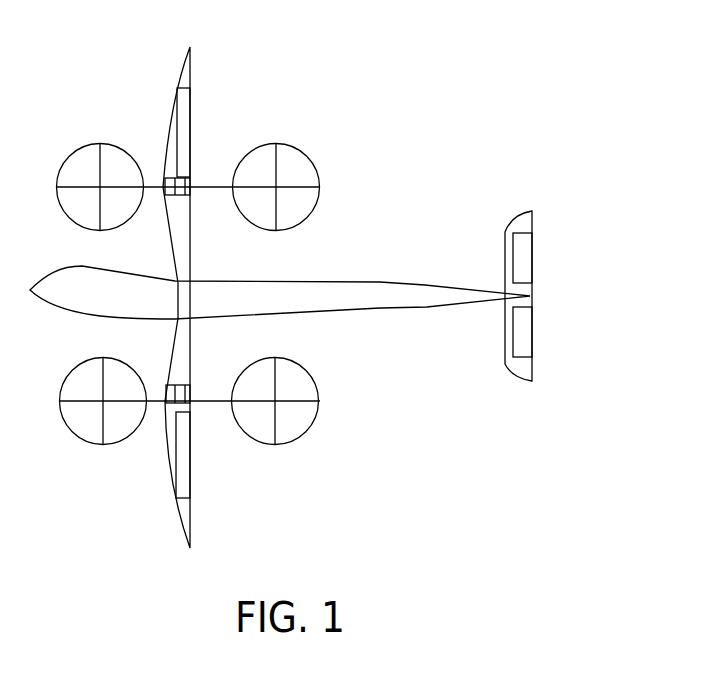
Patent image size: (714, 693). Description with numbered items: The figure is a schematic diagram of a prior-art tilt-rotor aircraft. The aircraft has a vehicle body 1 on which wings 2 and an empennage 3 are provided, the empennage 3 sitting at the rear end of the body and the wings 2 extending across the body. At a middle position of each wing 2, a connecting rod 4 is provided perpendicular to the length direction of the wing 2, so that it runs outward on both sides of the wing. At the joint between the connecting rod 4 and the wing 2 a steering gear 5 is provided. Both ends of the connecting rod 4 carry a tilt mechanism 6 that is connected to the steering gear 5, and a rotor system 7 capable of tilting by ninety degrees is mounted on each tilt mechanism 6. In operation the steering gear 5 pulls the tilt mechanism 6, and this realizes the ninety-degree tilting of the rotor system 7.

The vehicle body 1 is at (305, 298).
The wing 2 is at (173, 147).
The empennage 3 is at (523, 257).
The connecting rod 4 is at (205, 183).
The steering gear 5 is at (173, 197).
The tilt mechanism 6 is at (276, 187).
The rotor system 7 is at (318, 173).